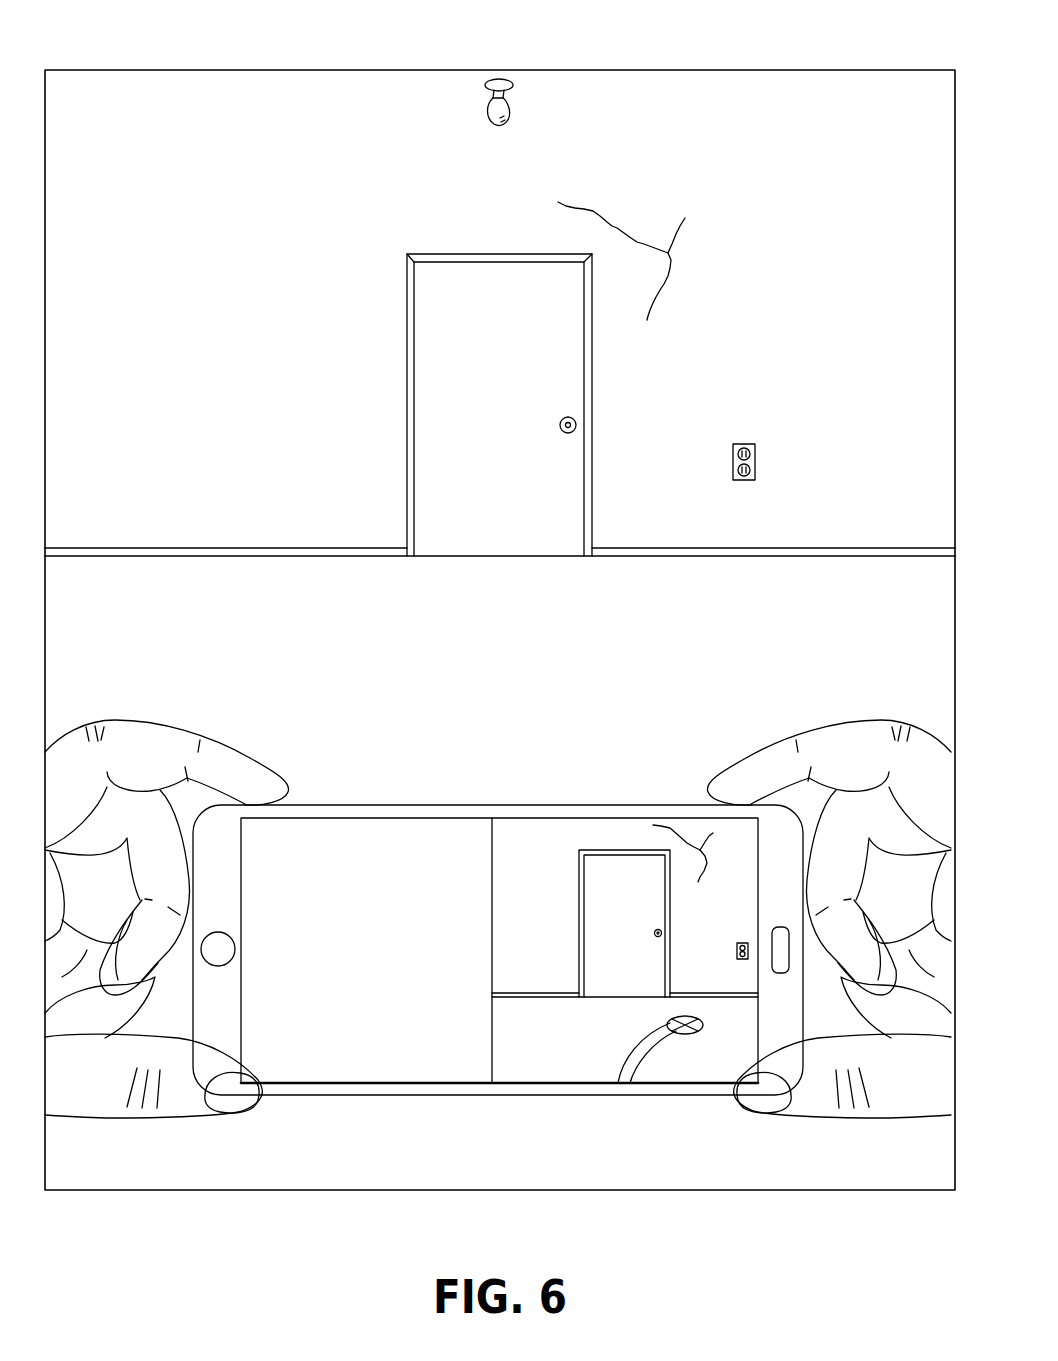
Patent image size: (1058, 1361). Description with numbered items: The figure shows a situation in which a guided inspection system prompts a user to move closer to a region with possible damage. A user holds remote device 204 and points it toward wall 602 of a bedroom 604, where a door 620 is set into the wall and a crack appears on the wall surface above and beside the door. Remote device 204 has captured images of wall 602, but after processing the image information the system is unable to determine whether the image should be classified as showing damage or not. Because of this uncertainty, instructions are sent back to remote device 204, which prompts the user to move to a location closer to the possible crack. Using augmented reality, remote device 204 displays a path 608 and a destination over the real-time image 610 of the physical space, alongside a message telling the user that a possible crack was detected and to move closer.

The bedroom 604 is at (293, 110).
The wall 602 is at (195, 383).
The door 620 is at (522, 383).
The remote device 204 is at (458, 1095).
The path 608 is at (645, 1055).
The real-time image 610 is at (707, 1063).